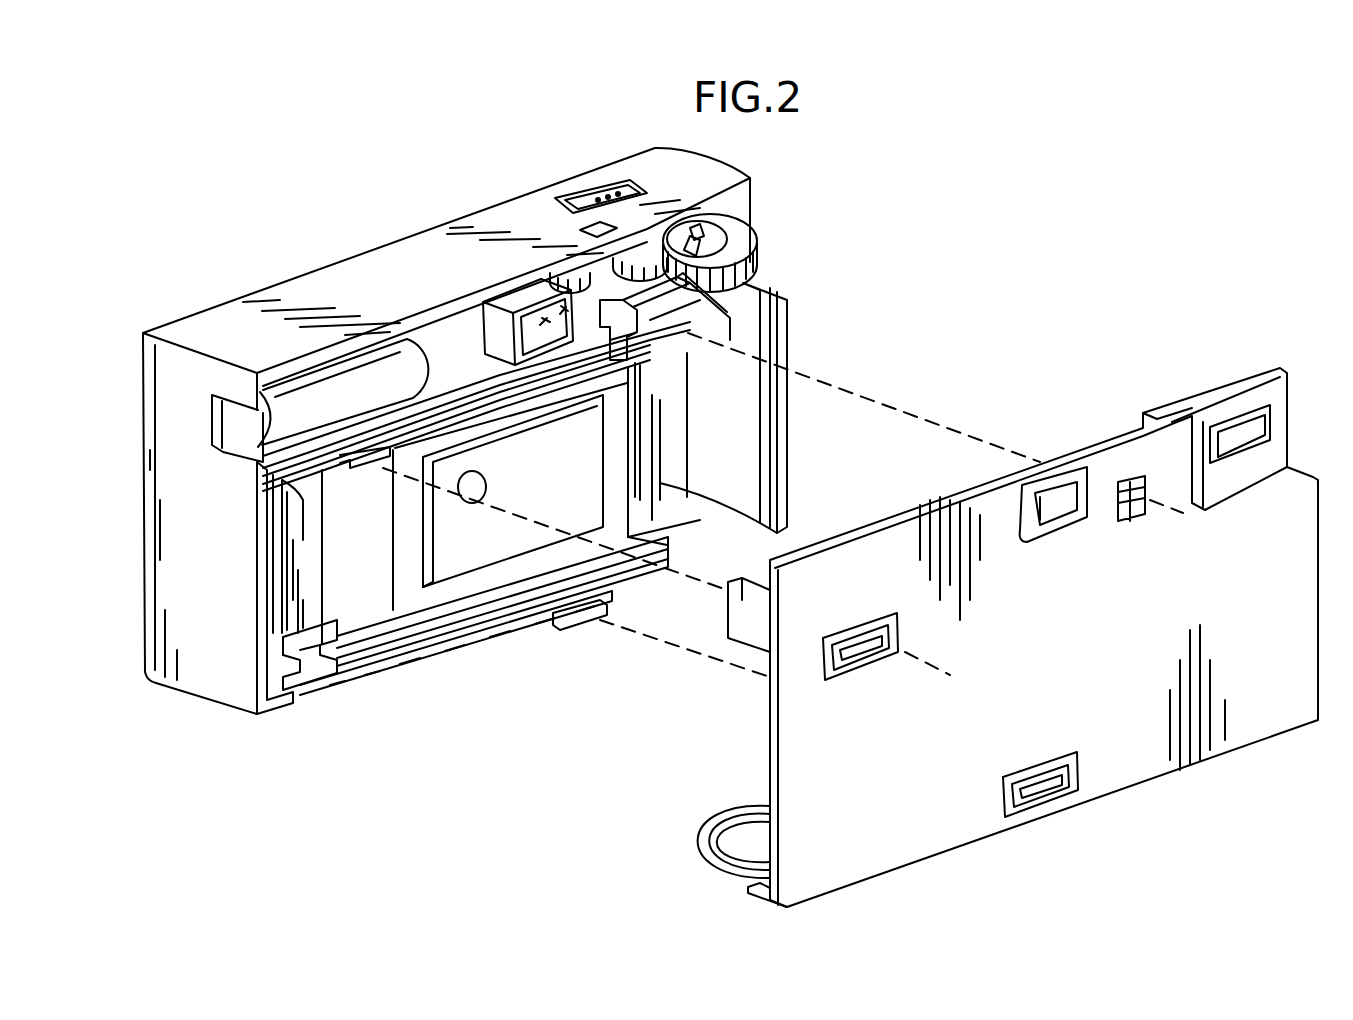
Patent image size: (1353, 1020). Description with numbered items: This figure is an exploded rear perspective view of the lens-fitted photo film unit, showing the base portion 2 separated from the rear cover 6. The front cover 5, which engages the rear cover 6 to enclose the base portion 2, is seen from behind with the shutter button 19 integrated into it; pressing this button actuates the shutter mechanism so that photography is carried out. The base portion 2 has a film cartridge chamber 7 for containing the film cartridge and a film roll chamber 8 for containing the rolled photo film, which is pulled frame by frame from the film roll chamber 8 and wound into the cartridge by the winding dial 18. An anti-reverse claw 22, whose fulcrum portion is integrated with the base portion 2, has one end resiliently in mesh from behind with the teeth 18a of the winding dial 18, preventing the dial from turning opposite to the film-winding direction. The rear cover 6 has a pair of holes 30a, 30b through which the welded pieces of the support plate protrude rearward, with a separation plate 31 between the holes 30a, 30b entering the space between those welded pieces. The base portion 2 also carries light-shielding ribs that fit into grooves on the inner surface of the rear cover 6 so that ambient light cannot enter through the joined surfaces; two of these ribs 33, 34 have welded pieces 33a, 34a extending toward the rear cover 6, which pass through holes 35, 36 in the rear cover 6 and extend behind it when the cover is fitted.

The base portion 2 is at (397, 676).
The front cover 5 is at (322, 266).
The rear cover 6 is at (1263, 749).
The film cartridge chamber 7 is at (742, 470).
The film roll chamber 8 is at (313, 588).
The winding dial 18 is at (742, 230).
The teeth of the winding dial 18a is at (745, 244).
The shutter button 19 is at (607, 181).
The anti-reverse claw 22 is at (690, 342).
The hole 30a is at (1130, 480).
The hole 30b is at (1130, 515).
The separation plate 31 is at (1120, 498).
The light-shielding rib 33 is at (295, 490).
The welded piece 33a is at (367, 462).
The light-shielding rib 34 is at (486, 640).
The welded piece 34a is at (577, 616).
The hole 35 is at (857, 656).
The hole 36 is at (1030, 795).